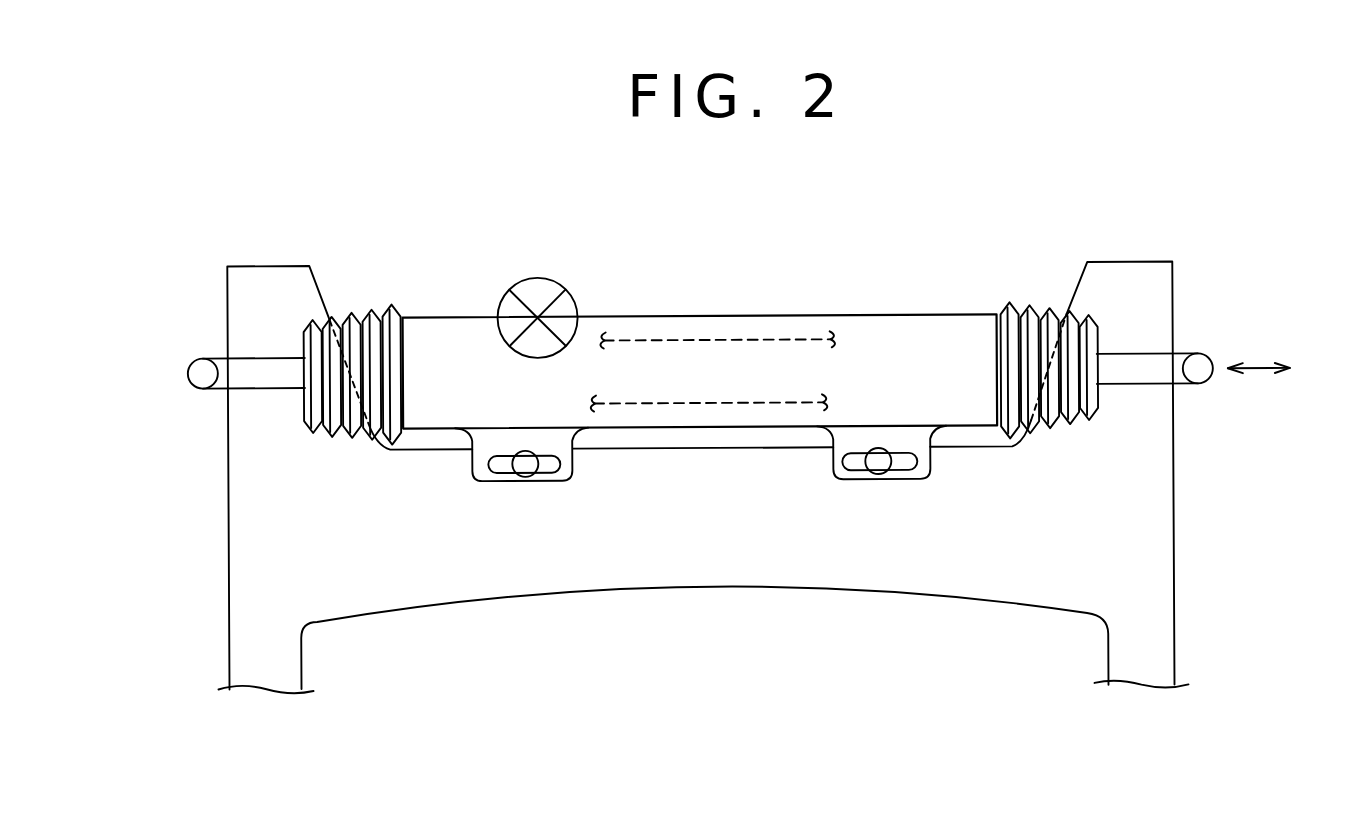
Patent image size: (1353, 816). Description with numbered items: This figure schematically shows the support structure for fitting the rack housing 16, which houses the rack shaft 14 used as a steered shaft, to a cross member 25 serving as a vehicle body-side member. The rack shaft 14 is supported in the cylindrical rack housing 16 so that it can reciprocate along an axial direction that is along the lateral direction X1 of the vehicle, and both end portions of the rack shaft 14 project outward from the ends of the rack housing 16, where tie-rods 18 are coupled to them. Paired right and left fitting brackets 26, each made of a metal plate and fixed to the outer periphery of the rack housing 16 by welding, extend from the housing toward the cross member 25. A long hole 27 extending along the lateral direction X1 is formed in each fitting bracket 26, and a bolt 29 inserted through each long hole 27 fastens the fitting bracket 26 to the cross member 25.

The rack shaft 14 is at (798, 339).
The rack housing 16 is at (697, 316).
The tie-rod 18 is at (267, 373).
The cross member 25 is at (1153, 613).
The fitting bracket 26 is at (483, 484).
The long hole 27 is at (558, 467).
The bolt 29 is at (526, 467).
The lateral direction X1 is at (1258, 370).